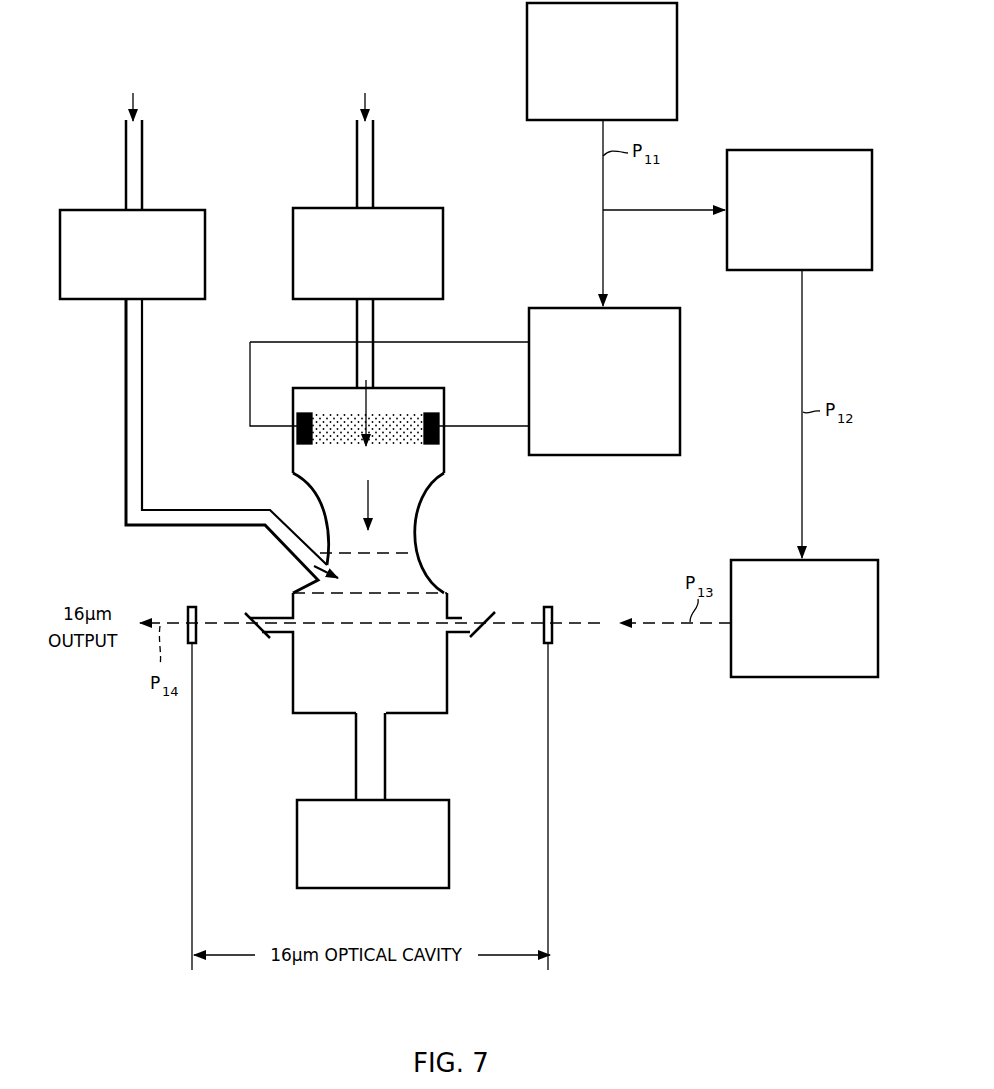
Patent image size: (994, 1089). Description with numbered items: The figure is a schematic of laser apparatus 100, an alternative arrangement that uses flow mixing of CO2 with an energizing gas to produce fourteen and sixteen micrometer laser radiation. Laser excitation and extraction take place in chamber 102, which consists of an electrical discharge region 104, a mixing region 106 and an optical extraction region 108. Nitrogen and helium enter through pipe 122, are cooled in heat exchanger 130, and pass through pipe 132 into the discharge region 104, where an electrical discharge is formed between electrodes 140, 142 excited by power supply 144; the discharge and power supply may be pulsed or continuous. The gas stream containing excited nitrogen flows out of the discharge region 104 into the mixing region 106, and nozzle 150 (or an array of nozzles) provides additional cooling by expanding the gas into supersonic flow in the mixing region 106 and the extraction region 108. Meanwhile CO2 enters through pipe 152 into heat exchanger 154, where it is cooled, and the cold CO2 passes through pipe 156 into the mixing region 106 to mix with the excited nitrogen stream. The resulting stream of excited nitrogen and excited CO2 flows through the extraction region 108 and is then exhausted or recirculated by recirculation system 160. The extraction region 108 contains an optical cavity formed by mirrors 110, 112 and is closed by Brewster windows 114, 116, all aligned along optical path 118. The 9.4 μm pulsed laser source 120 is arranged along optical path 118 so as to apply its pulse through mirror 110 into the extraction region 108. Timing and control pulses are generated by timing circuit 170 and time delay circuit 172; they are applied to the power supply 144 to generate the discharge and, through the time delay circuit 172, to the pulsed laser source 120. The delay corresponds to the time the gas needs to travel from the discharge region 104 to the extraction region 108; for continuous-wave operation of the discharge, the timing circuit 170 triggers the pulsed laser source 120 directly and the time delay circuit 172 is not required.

The laser apparatus 100 is at (104, 541).
The chamber 102 is at (447, 697).
The electrical discharge region 104 is at (405, 443).
The mixing region 106 is at (415, 575).
The optical extraction region 108 is at (373, 633).
The mirror 110 is at (552, 632).
The mirror 112 is at (195, 607).
The Brewster window 114 is at (260, 638).
The Brewster window 116 is at (482, 635).
The optical path 118 is at (510, 625).
The 9.4 μm pulsed laser source 120 is at (762, 677).
The pipe 122 is at (373, 168).
The heat exchanger 130 is at (318, 208).
The pipe 132 is at (373, 323).
The electrode 140 is at (303, 413).
The electrode 142 is at (432, 413).
The power supply 144 is at (653, 308).
The nozzle 150 is at (414, 517).
The pipe 152 is at (126, 150).
The heat exchanger 154 is at (184, 210).
The pipe 156 is at (126, 434).
The recirculation system 160 is at (450, 810).
The timing circuit 170 is at (677, 42).
The time delay circuit 172 is at (852, 150).